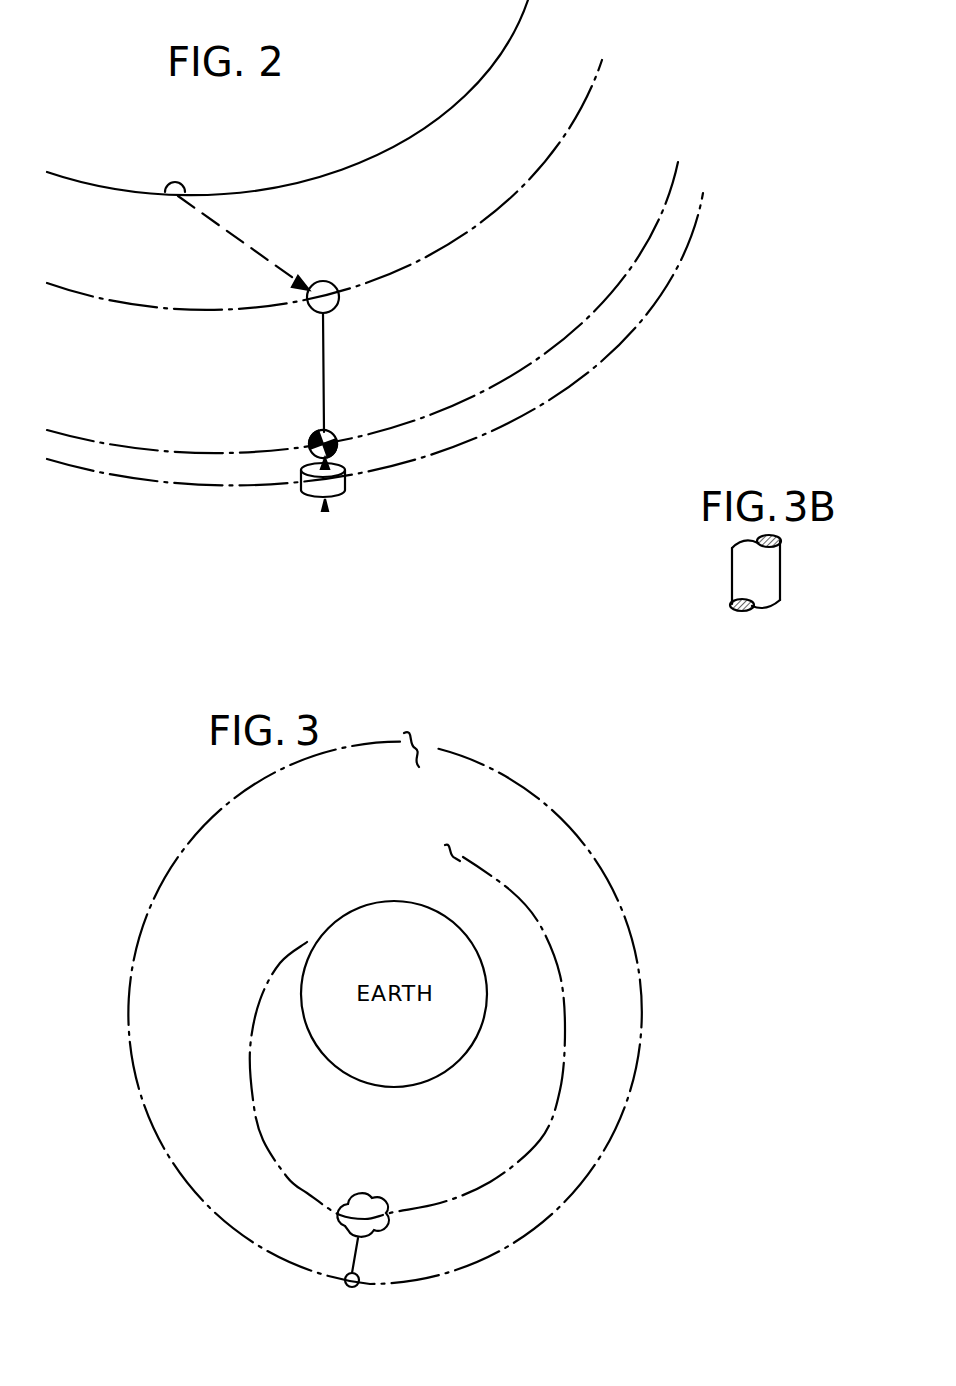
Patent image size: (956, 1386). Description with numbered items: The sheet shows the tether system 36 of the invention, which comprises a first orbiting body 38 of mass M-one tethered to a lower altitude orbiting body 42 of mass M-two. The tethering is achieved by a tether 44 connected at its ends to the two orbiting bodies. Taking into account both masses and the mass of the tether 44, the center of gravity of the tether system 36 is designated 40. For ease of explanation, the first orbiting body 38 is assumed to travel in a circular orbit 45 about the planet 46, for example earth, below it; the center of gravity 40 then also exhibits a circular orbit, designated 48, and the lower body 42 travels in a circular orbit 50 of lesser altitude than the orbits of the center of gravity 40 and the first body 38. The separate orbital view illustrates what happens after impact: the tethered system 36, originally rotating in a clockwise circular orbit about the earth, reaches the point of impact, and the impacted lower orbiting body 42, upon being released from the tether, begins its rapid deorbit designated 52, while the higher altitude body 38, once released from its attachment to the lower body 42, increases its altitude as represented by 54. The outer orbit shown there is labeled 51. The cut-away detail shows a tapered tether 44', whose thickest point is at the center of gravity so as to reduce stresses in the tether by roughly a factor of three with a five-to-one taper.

In FIG. 2, the tether system 36 is at (292, 348).
In FIG. 3, the tether system 36 is at (393, 1246).
In FIG. 2, the first orbiting body 38 is at (348, 487).
In FIG. 3, the first orbiting body 38 is at (354, 1288).
In FIG. 2, the center of gravity 40 is at (340, 449).
In FIG. 2, the lower altitude orbiting body 42 is at (340, 294).
In FIG. 3, the lower altitude orbiting body 42 is at (372, 1210).
In FIG. 2, the tether 44 is at (362, 372).
In FIG. 3B, the tapered tether 44' is at (791, 573).
In FIG. 2, the circular orbit 45 is at (630, 335).
In FIG. 2, the planet 46 is at (287, 97).
In FIG. 2, the circular orbit 48 is at (628, 268).
In FIG. 2, the circular orbit 50 is at (583, 107).
In FIG. 3, the outer orbit 51 is at (641, 1058).
In FIG. 3, the rapid deorbit 52 is at (262, 1100).
In FIG. 3, the altitude increase 54 is at (144, 1182).